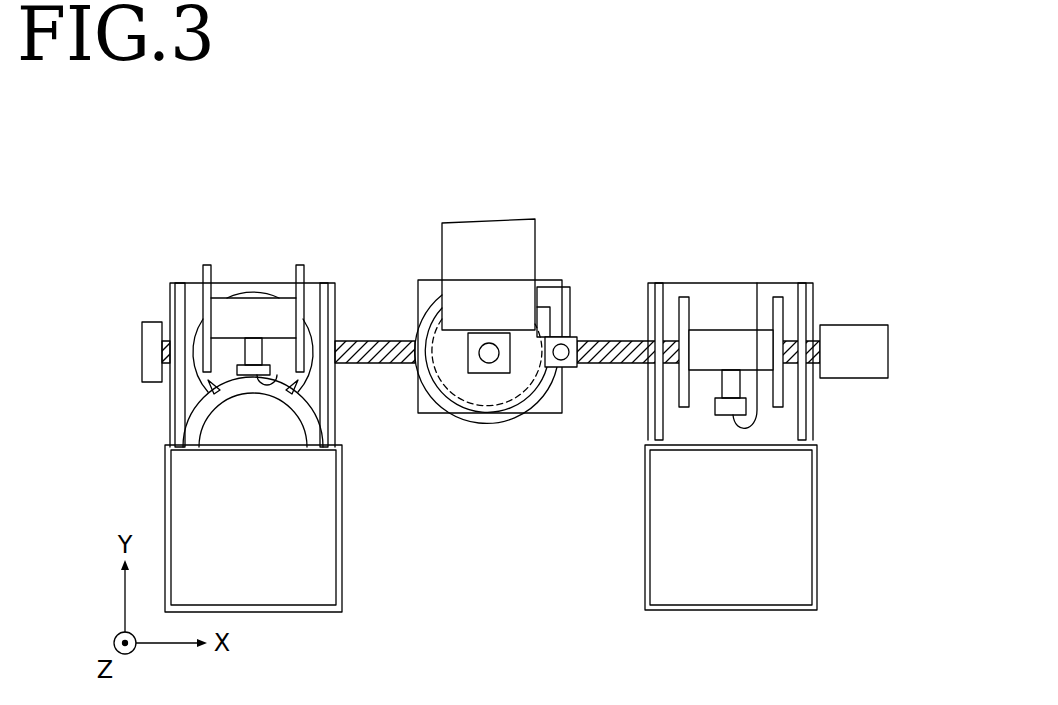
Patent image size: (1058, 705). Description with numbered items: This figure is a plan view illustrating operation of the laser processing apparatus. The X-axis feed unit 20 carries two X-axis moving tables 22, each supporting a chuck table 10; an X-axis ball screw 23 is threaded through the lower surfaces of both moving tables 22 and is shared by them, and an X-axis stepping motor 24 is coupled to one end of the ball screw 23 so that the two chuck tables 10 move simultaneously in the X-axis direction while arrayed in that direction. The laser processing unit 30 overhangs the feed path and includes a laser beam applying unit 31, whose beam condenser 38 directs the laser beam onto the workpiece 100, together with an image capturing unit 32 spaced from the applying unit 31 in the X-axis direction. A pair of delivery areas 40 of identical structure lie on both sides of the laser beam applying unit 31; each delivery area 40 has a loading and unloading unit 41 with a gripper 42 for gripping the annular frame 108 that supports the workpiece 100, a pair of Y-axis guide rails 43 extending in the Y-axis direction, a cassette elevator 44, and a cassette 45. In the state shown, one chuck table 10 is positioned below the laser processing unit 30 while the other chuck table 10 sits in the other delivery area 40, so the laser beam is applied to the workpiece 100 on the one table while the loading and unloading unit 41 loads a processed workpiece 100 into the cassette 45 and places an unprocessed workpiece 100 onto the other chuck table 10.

The chuck table 10 is at (336, 326).
The X-axis feed unit 20 is at (858, 451).
The X-axis moving table 22 is at (191, 283).
The X-axis ball screw 23 is at (604, 364).
The X-axis stepping motor 24 is at (873, 378).
The laser processing unit 30 is at (514, 239).
The laser beam applying unit 31 is at (498, 318).
The image capturing unit 32 is at (576, 337).
The beam condenser 38 is at (434, 323).
The delivery area 40 is at (245, 208).
The loading and unloading unit 41 is at (236, 292).
The gripper 42 is at (283, 305).
The Y-axis guide rail 43 is at (180, 283).
The cassette elevator 44 is at (298, 612).
The cassette 45 is at (323, 567).
The workpiece 100 is at (487, 398).
The annular frame 108 is at (308, 402).